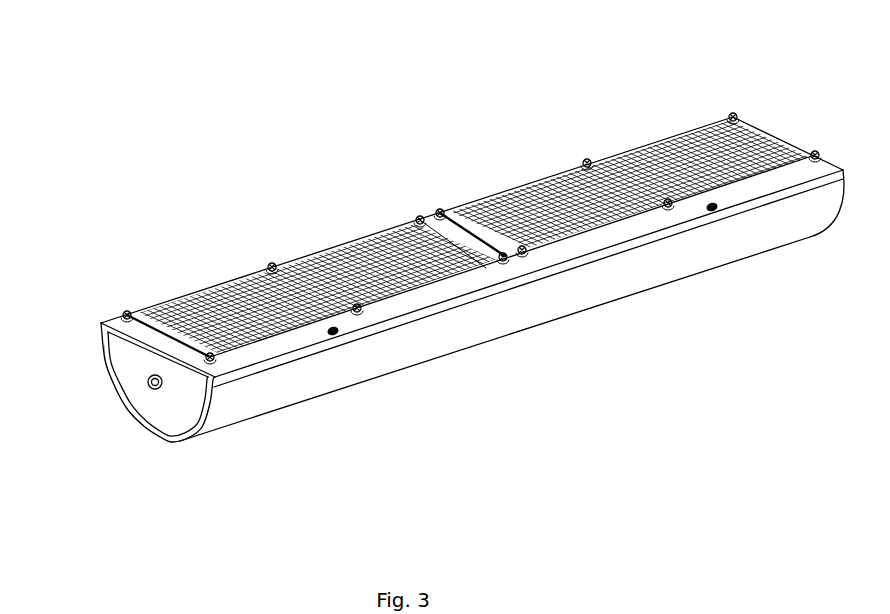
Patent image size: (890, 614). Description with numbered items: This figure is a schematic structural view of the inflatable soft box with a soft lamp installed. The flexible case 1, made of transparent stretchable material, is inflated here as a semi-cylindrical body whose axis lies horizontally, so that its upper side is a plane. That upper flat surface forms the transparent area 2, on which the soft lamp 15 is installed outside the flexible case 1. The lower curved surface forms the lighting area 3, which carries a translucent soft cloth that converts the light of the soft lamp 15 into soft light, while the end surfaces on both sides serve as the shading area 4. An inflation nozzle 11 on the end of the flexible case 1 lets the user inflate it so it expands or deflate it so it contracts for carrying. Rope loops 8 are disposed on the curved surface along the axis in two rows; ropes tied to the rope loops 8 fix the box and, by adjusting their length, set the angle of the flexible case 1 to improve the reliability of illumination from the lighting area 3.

The flexible case 1 is at (810, 151).
The transparent area 2 is at (468, 290).
The lighting area 3 is at (652, 290).
The shading area 4 is at (165, 429).
The rope loop 8 is at (333, 336).
The inflation nozzle 11 is at (147, 381).
The soft lamp 15 is at (332, 268).